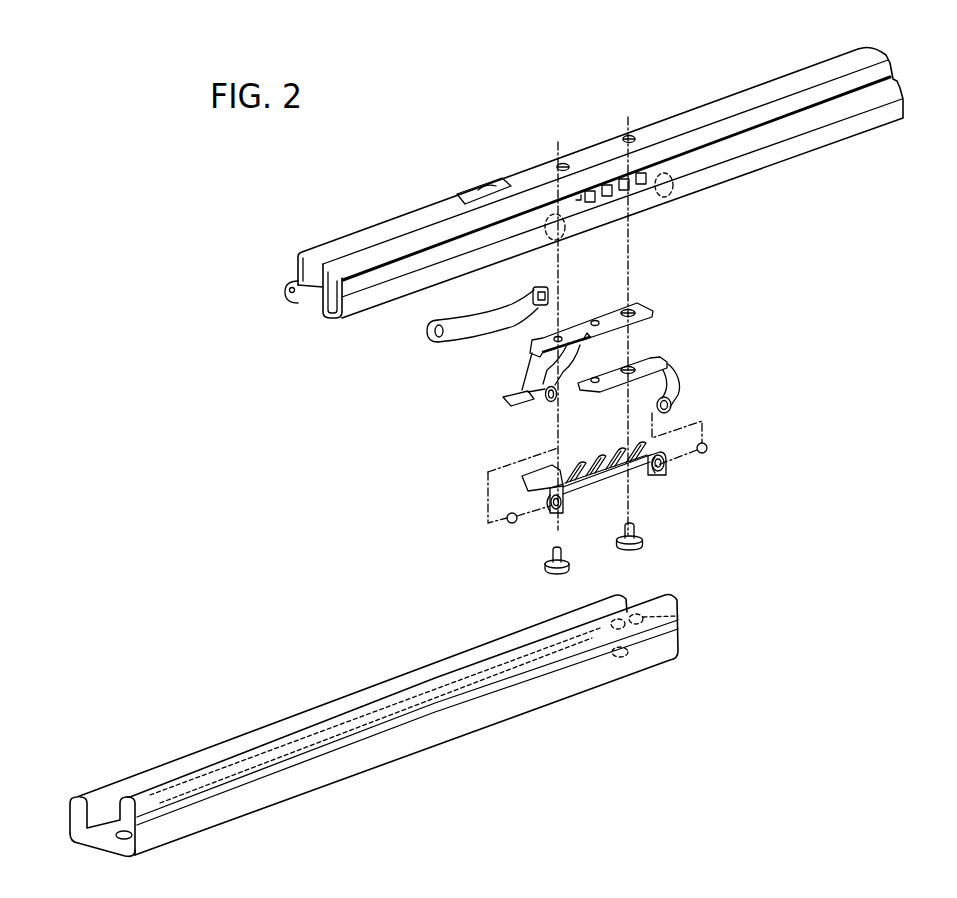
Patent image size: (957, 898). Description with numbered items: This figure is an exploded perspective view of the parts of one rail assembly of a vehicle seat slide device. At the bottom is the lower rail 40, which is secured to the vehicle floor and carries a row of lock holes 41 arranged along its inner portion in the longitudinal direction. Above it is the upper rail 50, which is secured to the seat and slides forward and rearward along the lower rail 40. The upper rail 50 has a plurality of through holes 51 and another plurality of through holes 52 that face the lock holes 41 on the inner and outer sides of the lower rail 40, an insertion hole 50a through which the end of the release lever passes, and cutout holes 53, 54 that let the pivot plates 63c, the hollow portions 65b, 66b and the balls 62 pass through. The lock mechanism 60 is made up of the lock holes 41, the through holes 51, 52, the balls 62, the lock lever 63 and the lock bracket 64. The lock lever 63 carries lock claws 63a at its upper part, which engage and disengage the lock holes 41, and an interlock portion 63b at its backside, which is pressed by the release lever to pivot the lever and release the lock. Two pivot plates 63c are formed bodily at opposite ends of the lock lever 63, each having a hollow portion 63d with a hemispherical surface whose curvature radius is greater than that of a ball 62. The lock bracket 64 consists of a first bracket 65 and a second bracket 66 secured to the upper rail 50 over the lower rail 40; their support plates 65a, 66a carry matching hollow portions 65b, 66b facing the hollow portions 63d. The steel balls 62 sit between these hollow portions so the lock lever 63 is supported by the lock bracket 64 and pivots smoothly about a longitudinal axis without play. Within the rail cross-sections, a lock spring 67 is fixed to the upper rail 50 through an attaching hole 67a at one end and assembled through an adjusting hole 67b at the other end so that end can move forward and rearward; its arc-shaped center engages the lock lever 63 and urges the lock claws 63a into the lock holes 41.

The lower rail 40 is at (637, 662).
The lock holes 41 is at (679, 617).
The upper rail 50 is at (878, 60).
The insertion hole 50a is at (483, 190).
The through holes 51 is at (612, 178).
The through holes 52 is at (652, 175).
The cutout hole 53 is at (559, 240).
The cutout hole 54 is at (668, 198).
The lock mechanism 60 is at (827, 357).
The balls 62 is at (510, 524).
The lock lever 63 is at (617, 490).
The lock claws 63a is at (615, 450).
The interlock portion 63b is at (535, 472).
The pivot plates 63c is at (565, 507).
The hollow portion 63d is at (553, 506).
The lock bracket 64 is at (712, 290).
The first bracket 65 is at (589, 348).
The support plate 65a is at (570, 368).
The hollow portion 65b is at (557, 396).
The second bracket 66 is at (661, 369).
The support plate 66a is at (673, 378).
The hollow portion 66b is at (672, 418).
The lock spring 67 is at (488, 332).
The attaching hole 67a is at (431, 333).
The adjusting hole 67b is at (547, 295).